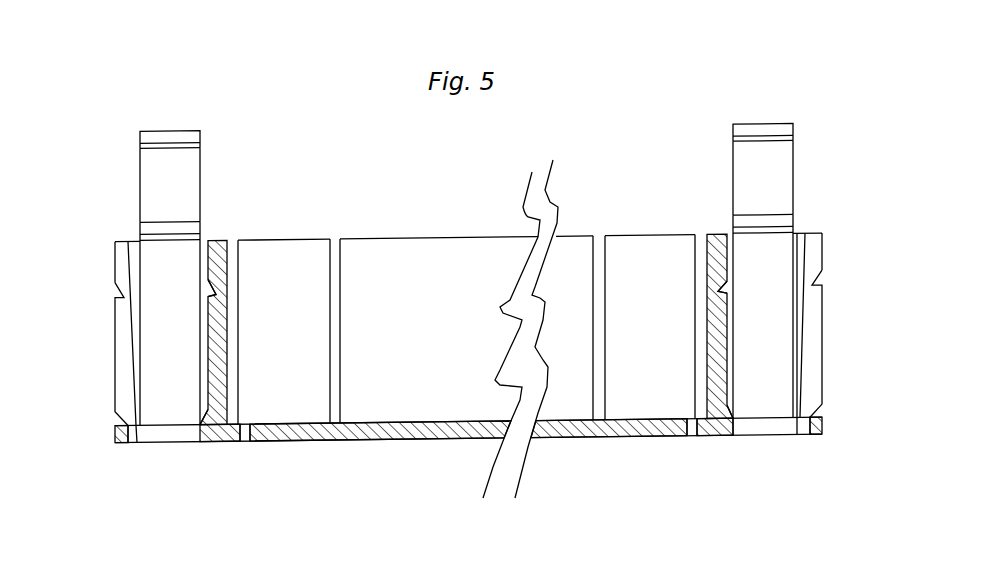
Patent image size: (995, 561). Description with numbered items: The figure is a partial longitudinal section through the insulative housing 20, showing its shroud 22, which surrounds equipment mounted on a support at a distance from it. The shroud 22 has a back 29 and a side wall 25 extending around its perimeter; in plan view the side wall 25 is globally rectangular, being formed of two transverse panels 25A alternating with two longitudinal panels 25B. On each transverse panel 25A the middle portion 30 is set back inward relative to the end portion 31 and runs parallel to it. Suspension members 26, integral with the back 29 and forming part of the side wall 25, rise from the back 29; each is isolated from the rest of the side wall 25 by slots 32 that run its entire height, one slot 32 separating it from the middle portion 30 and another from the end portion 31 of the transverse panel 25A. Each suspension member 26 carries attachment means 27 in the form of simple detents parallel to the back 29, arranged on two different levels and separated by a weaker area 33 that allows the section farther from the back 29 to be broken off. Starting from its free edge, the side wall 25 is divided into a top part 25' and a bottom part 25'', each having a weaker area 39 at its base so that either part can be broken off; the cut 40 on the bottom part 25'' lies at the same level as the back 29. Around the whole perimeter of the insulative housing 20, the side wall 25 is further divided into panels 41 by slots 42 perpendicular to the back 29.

The insulative housing 20 is at (787, 452).
The shroud 22 is at (115, 440).
The side wall 25 is at (650, 170).
The top part 25' is at (428, 219).
The bottom part 25'' is at (85, 363).
The transverse panel 25A is at (122, 357).
The longitudinal panel 25B is at (451, 225).
The suspension member 26 is at (203, 131).
The attachment means 27 is at (188, 138).
The back 29 is at (390, 432).
The middle portion 30 is at (218, 367).
The end portion 31 is at (115, 337).
The slot 32 is at (138, 427).
The weaker area 33 is at (158, 215).
The weaker area 39 is at (127, 298).
The cut 40 is at (115, 292).
The panel 41 is at (665, 360).
The slot 42 is at (335, 238).